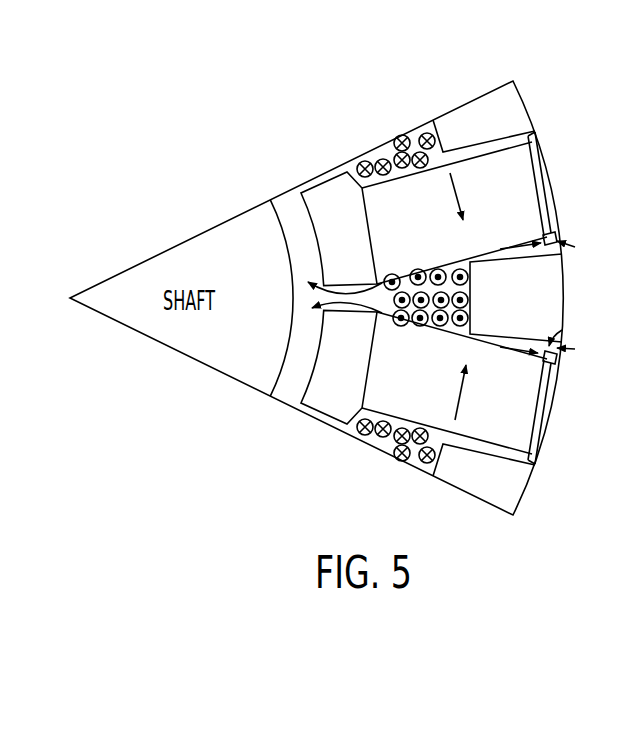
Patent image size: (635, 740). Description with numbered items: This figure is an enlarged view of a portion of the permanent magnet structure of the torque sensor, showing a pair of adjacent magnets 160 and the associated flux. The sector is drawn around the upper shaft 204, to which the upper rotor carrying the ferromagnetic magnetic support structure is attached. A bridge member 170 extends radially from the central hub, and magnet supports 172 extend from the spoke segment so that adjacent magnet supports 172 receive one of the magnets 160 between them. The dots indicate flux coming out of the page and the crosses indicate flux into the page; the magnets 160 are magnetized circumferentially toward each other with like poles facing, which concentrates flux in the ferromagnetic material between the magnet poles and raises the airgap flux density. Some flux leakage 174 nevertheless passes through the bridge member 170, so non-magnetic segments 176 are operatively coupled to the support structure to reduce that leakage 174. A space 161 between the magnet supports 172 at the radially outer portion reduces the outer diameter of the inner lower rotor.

The upper shaft 204 is at (167, 266).
The magnets 160 is at (385, 208).
The bridge member 170 is at (337, 422).
The space 161 is at (536, 303).
The magnet support 172 is at (530, 132).
The non-magnetic segments 176 is at (323, 402).
The flux leakage 174 is at (353, 292).